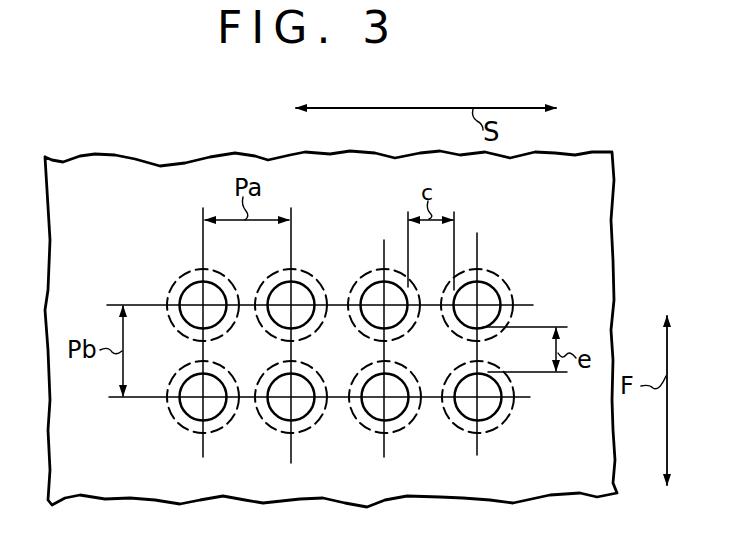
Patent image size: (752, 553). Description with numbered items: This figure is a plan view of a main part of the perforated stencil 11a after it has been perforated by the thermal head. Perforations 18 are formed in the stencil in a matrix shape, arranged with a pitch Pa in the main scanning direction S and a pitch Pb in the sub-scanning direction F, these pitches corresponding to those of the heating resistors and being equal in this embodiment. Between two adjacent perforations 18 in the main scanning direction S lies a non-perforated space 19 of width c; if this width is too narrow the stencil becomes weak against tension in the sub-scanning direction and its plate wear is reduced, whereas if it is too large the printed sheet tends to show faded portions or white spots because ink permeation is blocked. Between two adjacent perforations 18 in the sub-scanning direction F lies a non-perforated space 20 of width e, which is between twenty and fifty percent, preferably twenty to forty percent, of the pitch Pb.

The perforated stencil 11a is at (590, 215).
The perforations 18 is at (301, 296).
The non-perforated space 19 is at (248, 296).
The non-perforated space 20 is at (486, 349).